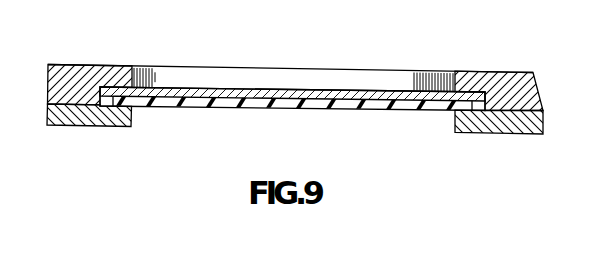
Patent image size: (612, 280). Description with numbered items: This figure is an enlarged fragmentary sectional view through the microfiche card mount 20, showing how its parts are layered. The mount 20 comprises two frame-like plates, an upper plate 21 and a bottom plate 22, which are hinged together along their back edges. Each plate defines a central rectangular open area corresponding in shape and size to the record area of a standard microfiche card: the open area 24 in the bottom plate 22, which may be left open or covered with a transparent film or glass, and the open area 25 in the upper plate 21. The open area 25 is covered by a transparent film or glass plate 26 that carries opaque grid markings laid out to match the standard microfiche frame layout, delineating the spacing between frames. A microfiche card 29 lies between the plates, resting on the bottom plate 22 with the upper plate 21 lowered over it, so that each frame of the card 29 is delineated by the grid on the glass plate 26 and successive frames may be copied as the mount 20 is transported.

The microfiche card mount 20 is at (432, 50).
The upper plate 21 is at (491, 80).
The bottom plate 22 is at (507, 122).
The open area 24 is at (131, 112).
The open area 25 is at (139, 78).
The glass plate 26 is at (268, 90).
The microfiche card 29 is at (248, 112).